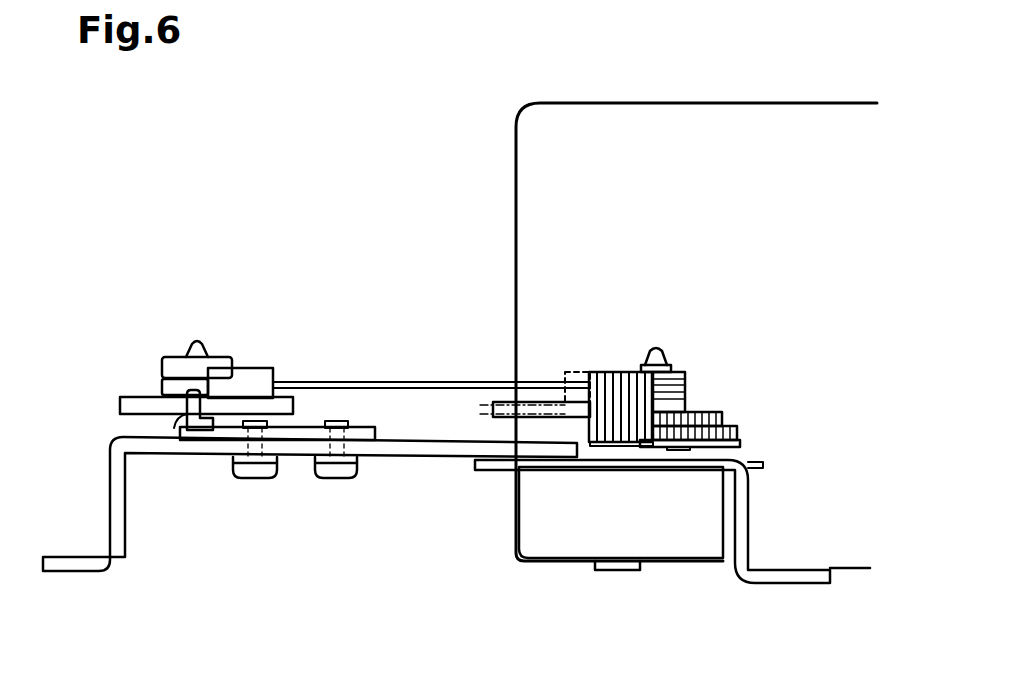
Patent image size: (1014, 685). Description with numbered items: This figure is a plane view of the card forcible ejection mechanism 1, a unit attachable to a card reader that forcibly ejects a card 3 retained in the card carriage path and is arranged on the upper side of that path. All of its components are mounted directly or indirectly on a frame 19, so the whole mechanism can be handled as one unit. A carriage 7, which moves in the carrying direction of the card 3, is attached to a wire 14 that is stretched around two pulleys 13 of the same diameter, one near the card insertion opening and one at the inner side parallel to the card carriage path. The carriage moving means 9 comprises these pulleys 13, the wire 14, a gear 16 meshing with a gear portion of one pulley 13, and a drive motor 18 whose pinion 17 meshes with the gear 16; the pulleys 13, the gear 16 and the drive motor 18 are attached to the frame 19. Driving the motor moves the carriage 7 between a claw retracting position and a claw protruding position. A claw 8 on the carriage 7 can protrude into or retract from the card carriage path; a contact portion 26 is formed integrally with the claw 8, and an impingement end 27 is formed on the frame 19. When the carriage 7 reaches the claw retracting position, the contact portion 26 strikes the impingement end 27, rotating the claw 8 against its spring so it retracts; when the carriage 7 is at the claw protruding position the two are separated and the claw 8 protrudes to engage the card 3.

The card forcible ejection mechanism 1 is at (338, 194).
The card 3 is at (680, 138).
The carriage 7 is at (260, 370).
The claw 8 is at (123, 405).
The carriage moving means 9 is at (768, 423).
The pulley 13 is at (165, 360).
The wire 14 is at (400, 380).
The gear 16 is at (708, 412).
The pinion 17 is at (608, 372).
The drive motor 18 is at (573, 538).
The frame 19 is at (432, 450).
The contact portion 26 is at (223, 410).
The impingement end 27 is at (178, 423).